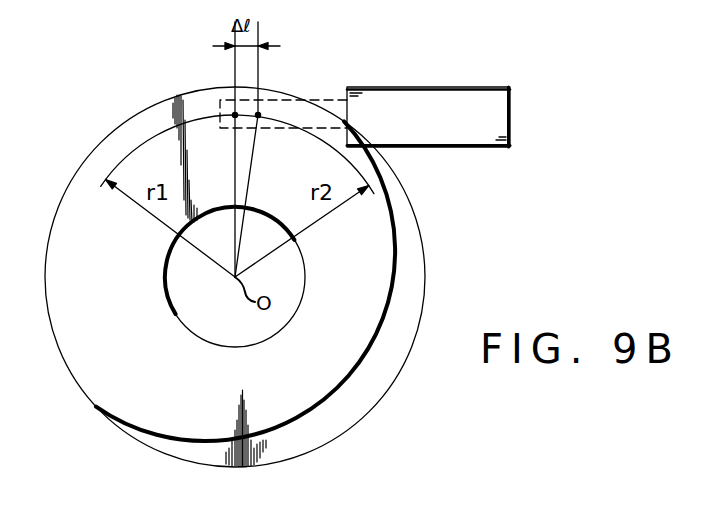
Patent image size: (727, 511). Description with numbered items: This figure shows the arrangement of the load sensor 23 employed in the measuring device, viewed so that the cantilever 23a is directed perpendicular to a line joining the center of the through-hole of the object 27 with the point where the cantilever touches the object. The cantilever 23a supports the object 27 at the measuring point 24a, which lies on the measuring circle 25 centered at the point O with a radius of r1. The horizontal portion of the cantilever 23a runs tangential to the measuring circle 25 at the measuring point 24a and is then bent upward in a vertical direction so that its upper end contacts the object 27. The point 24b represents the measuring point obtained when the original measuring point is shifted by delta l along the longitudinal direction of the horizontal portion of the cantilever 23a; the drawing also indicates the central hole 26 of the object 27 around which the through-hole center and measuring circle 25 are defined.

The load sensor 23 is at (474, 130).
The cantilever 23a is at (341, 109).
The measuring point 24a is at (234, 112).
The shifted measuring point 24b is at (259, 113).
The measuring circle 25 is at (130, 151).
The central hole 26 is at (175, 312).
The object 27 is at (98, 388).